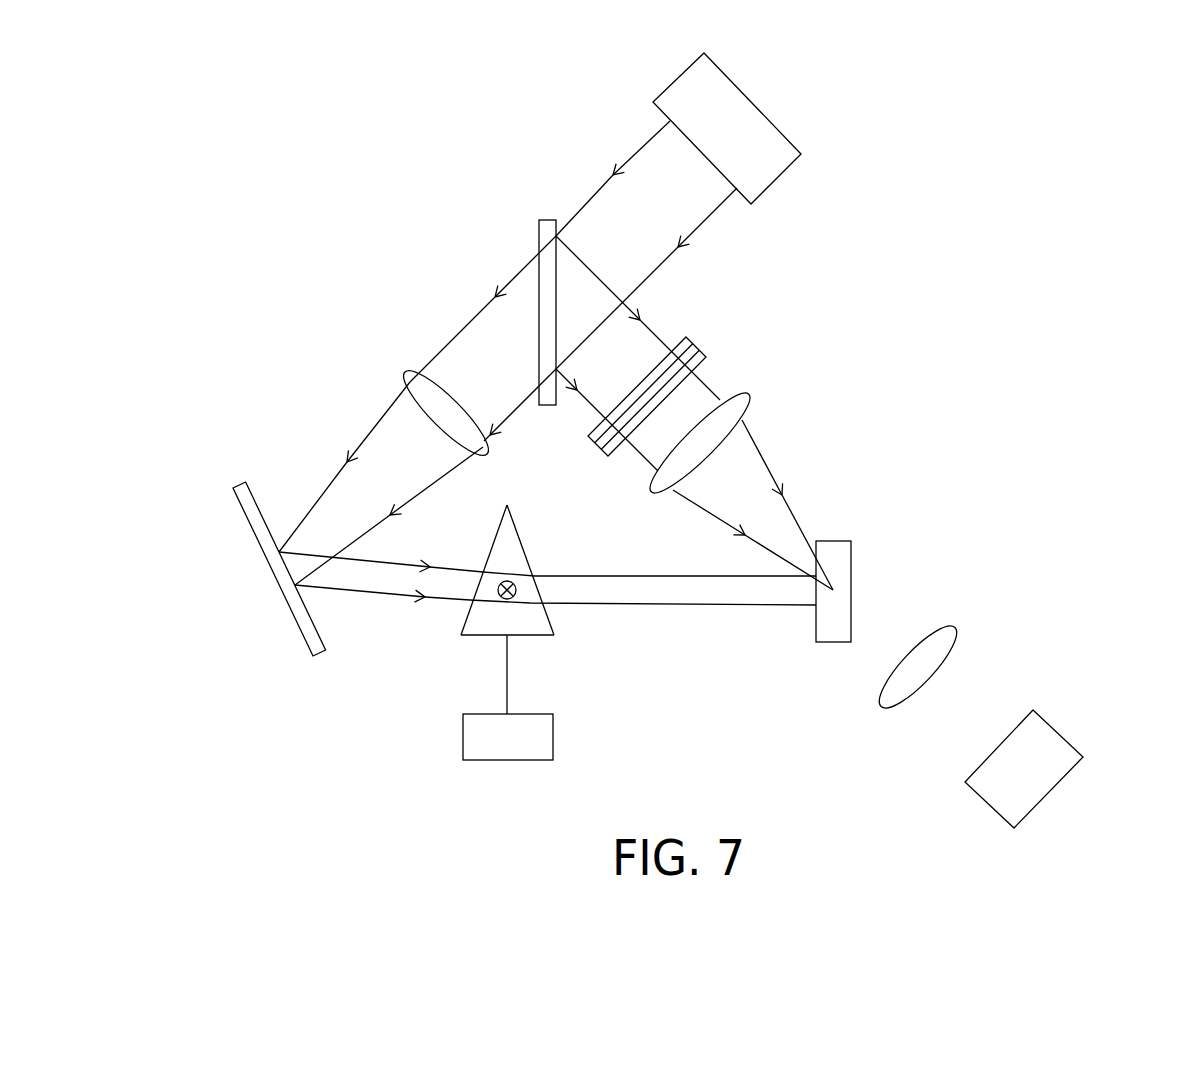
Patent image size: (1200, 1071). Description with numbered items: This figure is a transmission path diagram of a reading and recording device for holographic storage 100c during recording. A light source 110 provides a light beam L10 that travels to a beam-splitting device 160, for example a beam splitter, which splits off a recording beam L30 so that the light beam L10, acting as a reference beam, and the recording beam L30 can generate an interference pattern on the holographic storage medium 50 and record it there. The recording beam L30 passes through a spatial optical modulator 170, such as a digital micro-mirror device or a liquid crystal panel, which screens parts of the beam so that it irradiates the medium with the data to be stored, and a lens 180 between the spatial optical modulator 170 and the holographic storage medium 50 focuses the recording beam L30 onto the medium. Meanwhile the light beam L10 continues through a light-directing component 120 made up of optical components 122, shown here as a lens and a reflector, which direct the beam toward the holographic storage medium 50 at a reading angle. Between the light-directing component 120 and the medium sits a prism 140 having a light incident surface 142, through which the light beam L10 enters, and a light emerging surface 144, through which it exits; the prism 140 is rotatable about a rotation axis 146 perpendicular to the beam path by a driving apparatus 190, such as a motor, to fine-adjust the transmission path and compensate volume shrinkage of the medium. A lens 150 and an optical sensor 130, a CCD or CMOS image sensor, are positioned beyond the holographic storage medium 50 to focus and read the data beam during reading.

The reading and recording device for holographic storage 100c is at (1197, 846).
The light source 110 is at (757, 122).
The light beam L10 is at (590, 207).
The recording beam L30 is at (645, 345).
The beam-splitting device 160 is at (543, 231).
The spatial optical modulator 170 is at (693, 353).
The lens 180 is at (742, 410).
The light-directing component 120 is at (328, 498).
The optical component 122 is at (403, 372).
The prism 140 is at (528, 621).
The light incident surface 142 is at (467, 616).
The light emerging surface 144 is at (552, 620).
The rotation axis 146 is at (518, 589).
The driving apparatus 190 is at (540, 737).
The holographic storage medium 50 is at (824, 632).
The lens 150 is at (895, 697).
The optical sensor 130 is at (1047, 738).